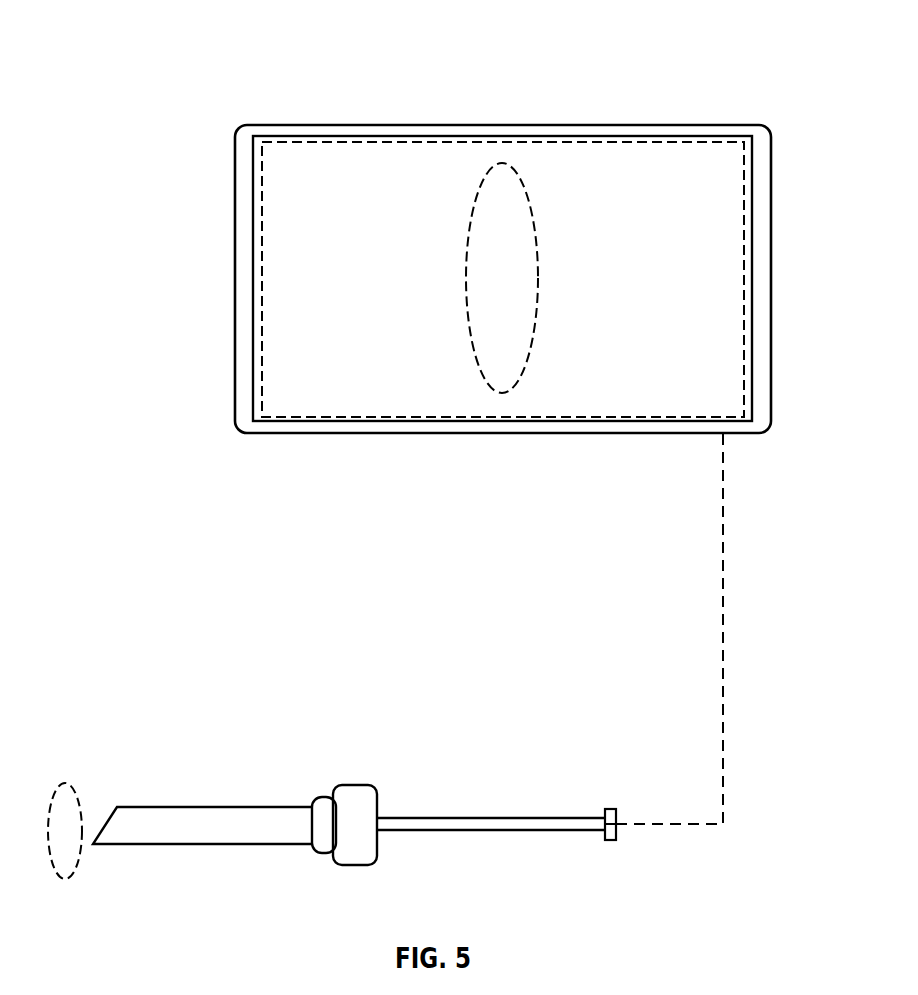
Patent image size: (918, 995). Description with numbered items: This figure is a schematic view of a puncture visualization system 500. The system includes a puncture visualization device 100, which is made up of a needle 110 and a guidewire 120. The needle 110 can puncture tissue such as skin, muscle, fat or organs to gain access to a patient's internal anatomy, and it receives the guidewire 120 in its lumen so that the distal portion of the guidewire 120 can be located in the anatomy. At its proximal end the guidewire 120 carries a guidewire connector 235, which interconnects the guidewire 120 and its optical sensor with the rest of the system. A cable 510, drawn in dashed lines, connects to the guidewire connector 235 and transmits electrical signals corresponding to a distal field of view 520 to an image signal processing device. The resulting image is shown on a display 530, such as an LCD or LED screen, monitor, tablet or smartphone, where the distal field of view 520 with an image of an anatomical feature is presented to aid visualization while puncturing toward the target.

The puncture visualization system 500 is at (180, 48).
The display 530 is at (233, 141).
The distal field of view 520 is at (298, 244).
The cable 510 is at (735, 635).
The puncture visualization device 100 is at (236, 740).
The needle 110 is at (355, 790).
The guidewire 120 is at (517, 817).
The guidewire connector 235 is at (610, 808).